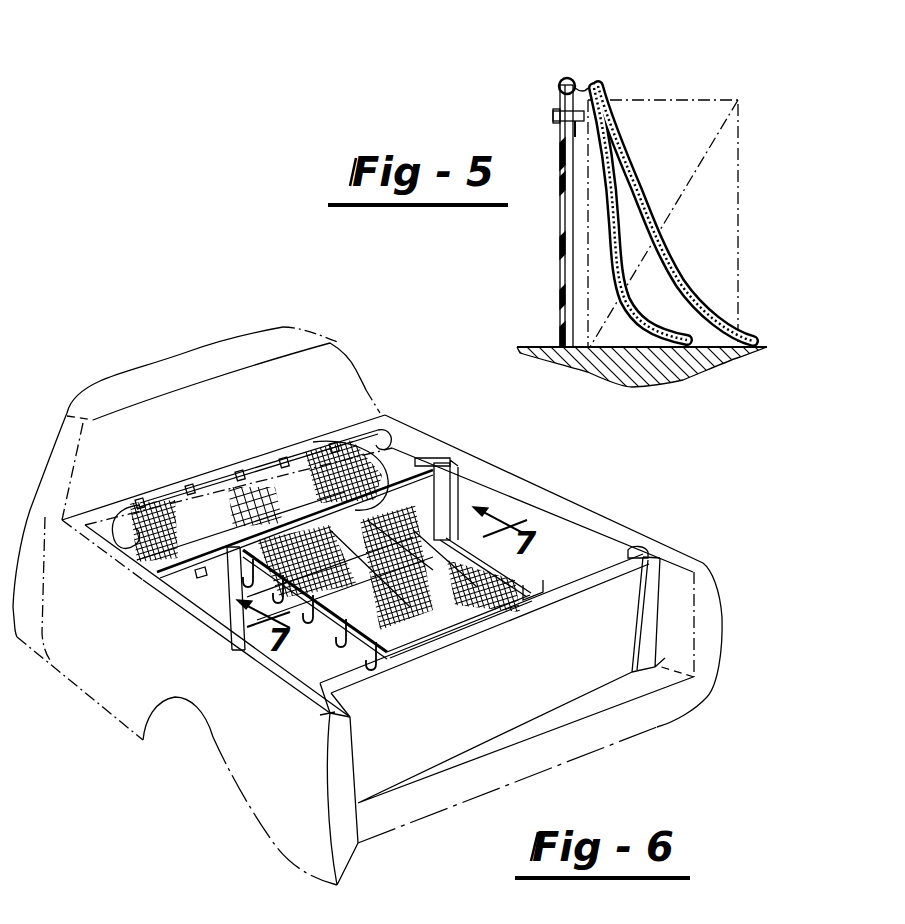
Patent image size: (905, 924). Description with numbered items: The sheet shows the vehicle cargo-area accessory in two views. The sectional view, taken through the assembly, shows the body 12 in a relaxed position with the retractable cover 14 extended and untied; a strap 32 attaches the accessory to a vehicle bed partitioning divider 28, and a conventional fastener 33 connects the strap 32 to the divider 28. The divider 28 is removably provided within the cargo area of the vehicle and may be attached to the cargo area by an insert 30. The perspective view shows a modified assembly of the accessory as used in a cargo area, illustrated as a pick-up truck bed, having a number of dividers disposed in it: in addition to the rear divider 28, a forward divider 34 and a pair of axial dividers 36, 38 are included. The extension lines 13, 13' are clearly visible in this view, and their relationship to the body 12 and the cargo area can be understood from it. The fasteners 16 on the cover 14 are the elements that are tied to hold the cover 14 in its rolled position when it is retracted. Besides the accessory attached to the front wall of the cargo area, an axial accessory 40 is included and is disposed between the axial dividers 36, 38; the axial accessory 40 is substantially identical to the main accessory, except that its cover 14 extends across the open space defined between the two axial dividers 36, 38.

In FIG. 5, the body 12 is at (642, 349).
In FIG. 6, the extension line 13 is at (229, 489).
In FIG. 6, the extension line 13' is at (393, 398).
In FIG. 5, the retractable cover 14 is at (630, 124).
In FIG. 6, the retractable cover 14 is at (460, 497).
In FIG. 6, the fasteners 16 is at (262, 590).
In FIG. 5, the divider 28 is at (557, 233).
In FIG. 6, the divider 28 is at (640, 557).
In FIG. 6, the insert 30 is at (450, 500).
In FIG. 5, the strap 32 is at (567, 76).
In FIG. 5, the fastener 33 is at (553, 117).
In FIG. 6, the forward divider 34 is at (418, 463).
In FIG. 6, the axial divider 36 is at (307, 665).
In FIG. 6, the axial divider 38 is at (348, 530).
In FIG. 6, the axial accessory 40 is at (630, 555).